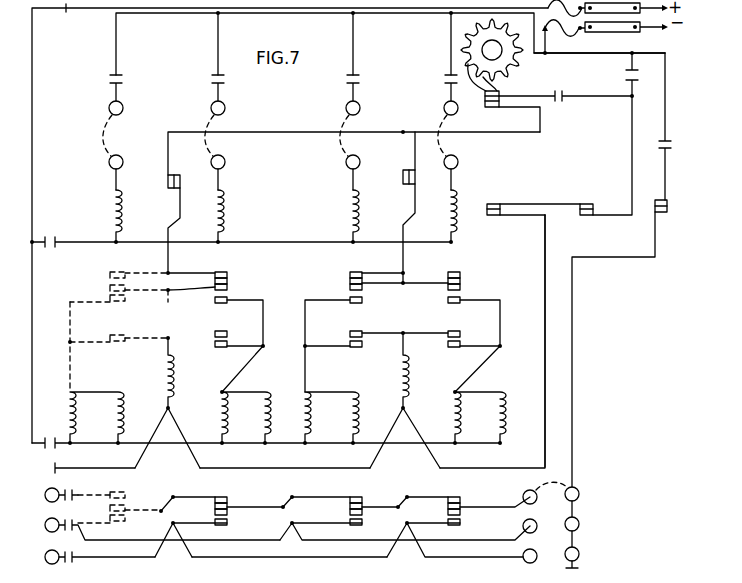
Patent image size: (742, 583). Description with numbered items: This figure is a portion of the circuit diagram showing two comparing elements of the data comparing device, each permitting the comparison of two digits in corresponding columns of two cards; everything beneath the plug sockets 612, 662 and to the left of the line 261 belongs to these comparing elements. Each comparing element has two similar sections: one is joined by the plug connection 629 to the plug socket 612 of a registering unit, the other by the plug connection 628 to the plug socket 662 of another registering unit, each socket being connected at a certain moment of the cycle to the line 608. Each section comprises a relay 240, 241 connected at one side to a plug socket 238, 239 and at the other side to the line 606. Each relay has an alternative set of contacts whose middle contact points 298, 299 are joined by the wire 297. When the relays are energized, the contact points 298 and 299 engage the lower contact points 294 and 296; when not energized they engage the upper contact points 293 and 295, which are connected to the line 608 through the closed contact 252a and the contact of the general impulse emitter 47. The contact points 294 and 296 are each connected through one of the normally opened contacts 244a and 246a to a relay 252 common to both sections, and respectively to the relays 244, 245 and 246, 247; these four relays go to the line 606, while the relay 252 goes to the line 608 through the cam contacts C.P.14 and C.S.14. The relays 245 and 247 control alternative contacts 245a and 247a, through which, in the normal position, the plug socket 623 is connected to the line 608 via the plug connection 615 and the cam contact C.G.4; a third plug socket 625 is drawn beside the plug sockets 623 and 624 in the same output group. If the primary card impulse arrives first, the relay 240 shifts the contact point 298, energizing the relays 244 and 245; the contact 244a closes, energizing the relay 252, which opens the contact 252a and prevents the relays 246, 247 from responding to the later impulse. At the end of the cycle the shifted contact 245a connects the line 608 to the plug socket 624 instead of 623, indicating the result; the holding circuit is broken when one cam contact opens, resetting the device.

The line 606 is at (69, 21).
The plug socket 612 is at (123, 104).
The plug socket 662 is at (225, 104).
The plug connection 629 is at (102, 128).
The plug connection 628 is at (205, 131).
The plug socket 238 is at (109, 166).
The plug socket 239 is at (225, 166).
The relay 240 is at (110, 210).
The relay 241 is at (224, 210).
The contact 252a is at (167, 191).
The general impulse emitter 47 is at (507, 66).
The line 608 is at (547, 54).
The cam contact C.P.14 is at (494, 198).
The cam contact C.S.14 is at (596, 196).
The cam contact C.G.4 is at (655, 216).
The upper contact point 293 is at (110, 274).
The upper contact point 295 is at (227, 276).
The middle contact point 298 is at (110, 290).
The middle contact point 299 is at (227, 287).
The lower contact point 294 is at (110, 300).
The wire 297 is at (159, 297).
The lower contact point 296 is at (212, 308).
The normally opened contact 244a is at (108, 341).
The normally opened contact 246a is at (212, 328).
The relay 244 is at (85, 384).
The relay 246 is at (232, 392).
The relay 252 is at (176, 400).
The line 261 is at (545, 298).
The relay 245 is at (112, 437).
The relay 247 is at (258, 437).
The plug socket 623 is at (66, 484).
The plug socket 624 is at (66, 514).
The switch 625 is at (216, 566).
The alternative contacts 247a is at (290, 497).
The alternative contacts 245a is at (130, 518).
The plug connection 615 is at (522, 489).